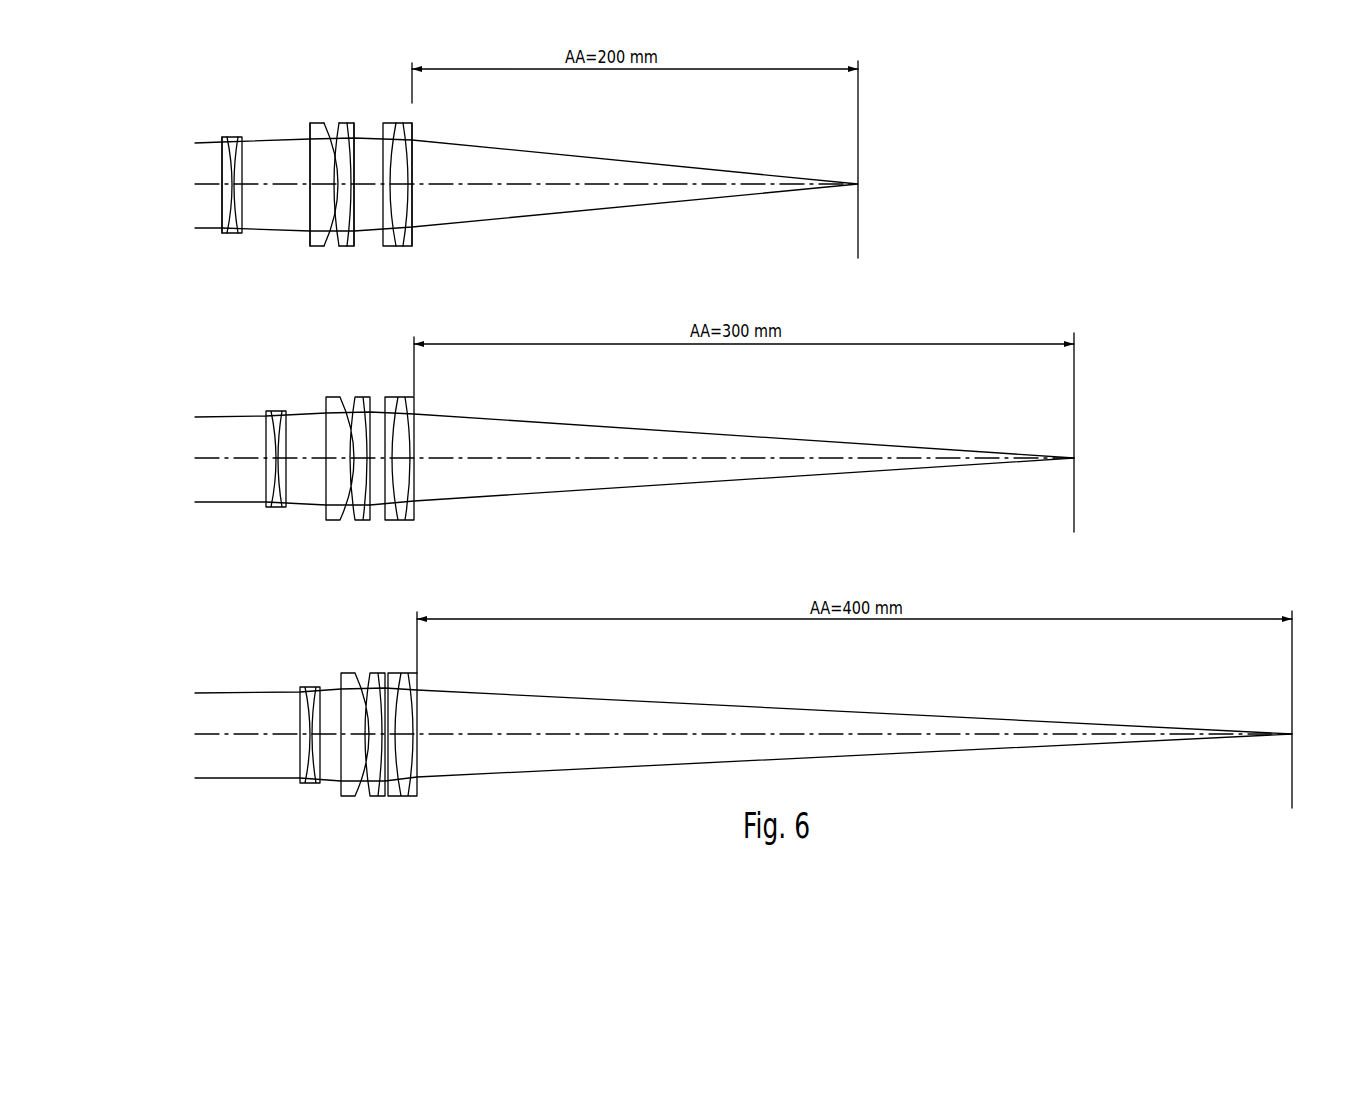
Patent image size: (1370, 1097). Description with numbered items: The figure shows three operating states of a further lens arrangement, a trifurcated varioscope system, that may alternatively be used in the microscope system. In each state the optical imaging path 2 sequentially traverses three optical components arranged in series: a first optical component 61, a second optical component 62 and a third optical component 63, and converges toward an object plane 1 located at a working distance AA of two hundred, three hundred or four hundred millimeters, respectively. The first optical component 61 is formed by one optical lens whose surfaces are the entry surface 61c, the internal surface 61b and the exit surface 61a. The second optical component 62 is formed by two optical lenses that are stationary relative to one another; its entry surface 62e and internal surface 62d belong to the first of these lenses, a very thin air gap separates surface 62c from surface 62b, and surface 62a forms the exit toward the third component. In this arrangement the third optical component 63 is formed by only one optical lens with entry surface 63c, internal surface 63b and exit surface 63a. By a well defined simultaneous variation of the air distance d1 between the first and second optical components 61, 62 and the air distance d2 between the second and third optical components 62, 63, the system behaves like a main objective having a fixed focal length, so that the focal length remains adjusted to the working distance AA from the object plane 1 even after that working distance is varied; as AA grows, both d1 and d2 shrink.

The object plane 1 is at (858, 137).
The light beam 2 is at (618, 183).
The first optical component 61 is at (246, 461).
The surface 61a of first optical component 61a is at (241, 232).
The surface 61b of first optical component 61b is at (228, 212).
The surface 61c of first optical component 61c is at (223, 232).
The second optical component 62 is at (331, 446).
The surface 62a of second optical component 62a is at (353, 124).
The surface 62b of second optical component 62b is at (344, 124).
The surface 62c of second optical component 62c is at (340, 125).
The surface 62d of second optical component 62d is at (326, 124).
The surface 62e of second optical component 62e is at (309, 125).
The third optical component 63 is at (423, 458).
The surface 63a of third optical component 63a is at (413, 136).
The surface 63b of third optical component 63b is at (406, 125).
The surface 63c of third optical component 63c is at (384, 124).
The air distance d1 is at (279, 231).
The air distance d2 is at (370, 231).